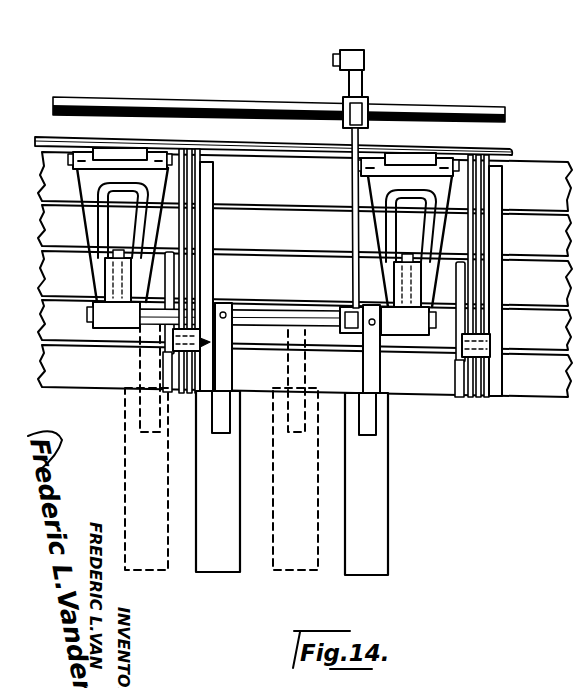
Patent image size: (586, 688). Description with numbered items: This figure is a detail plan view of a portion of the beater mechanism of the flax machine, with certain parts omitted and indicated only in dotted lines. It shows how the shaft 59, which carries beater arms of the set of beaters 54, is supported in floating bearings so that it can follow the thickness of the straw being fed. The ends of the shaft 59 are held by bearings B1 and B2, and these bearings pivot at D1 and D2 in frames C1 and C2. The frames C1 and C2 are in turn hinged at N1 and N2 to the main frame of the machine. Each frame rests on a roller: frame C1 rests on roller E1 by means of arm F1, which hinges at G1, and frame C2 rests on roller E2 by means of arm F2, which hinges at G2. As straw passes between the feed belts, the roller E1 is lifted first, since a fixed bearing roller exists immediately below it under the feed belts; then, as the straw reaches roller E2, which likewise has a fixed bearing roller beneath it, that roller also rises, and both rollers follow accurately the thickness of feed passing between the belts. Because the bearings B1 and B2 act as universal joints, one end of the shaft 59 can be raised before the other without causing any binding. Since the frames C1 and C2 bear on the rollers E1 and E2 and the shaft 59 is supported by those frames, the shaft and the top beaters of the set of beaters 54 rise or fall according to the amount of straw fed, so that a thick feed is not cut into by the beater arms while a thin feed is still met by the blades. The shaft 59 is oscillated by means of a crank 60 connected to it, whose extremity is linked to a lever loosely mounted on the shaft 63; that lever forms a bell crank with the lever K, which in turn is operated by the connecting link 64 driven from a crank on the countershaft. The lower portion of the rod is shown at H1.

The shaft 63 is at (262, 105).
The connecting link 64 is at (342, 50).
The lever K is at (362, 81).
The rod lower portion H1 is at (351, 232).
The hinge N2 is at (123, 157).
The hinge N1 is at (416, 163).
The frame C2 is at (133, 173).
The frame C1 is at (400, 182).
The pivot D2 is at (117, 258).
The pivot D1 is at (412, 262).
The roller E2 is at (205, 203).
The roller E1 is at (493, 204).
The arm F2 is at (169, 294).
The arm F1 is at (458, 313).
The hinge G2 is at (178, 351).
The hinge G1 is at (490, 341).
The bearing B2 is at (120, 317).
The bearing B1 is at (404, 323).
The shaft 59 is at (270, 317).
The crank 60 is at (351, 331).
The beater 54 is at (224, 567).